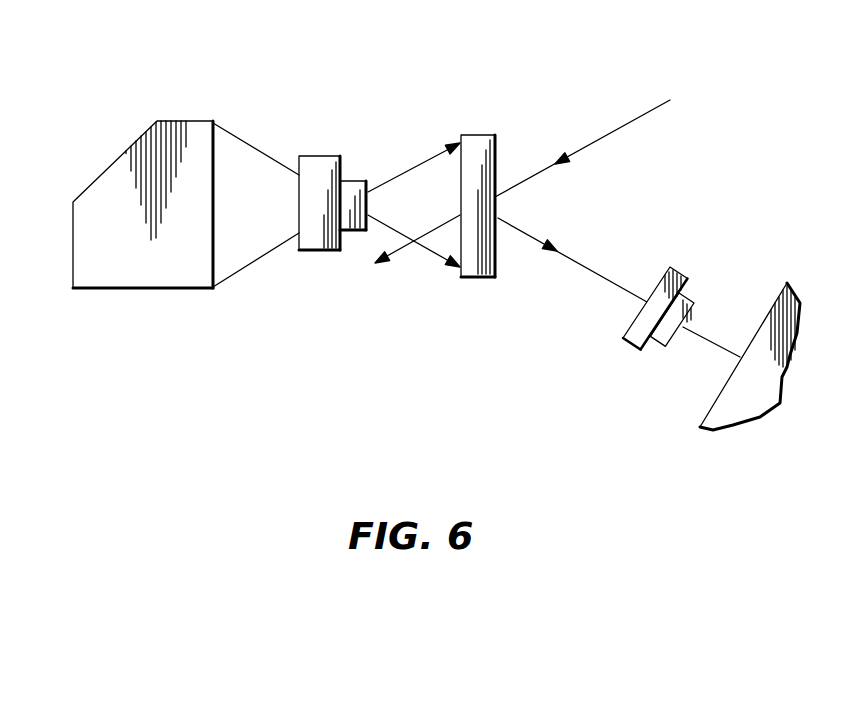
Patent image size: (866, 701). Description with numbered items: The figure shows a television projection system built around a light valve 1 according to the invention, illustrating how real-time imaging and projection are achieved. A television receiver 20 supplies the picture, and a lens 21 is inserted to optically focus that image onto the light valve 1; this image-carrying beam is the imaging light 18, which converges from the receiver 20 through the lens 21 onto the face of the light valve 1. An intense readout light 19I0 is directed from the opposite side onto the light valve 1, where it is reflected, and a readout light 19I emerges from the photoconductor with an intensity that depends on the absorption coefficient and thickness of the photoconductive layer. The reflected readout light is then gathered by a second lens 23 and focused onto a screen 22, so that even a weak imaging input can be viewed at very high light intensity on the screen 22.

The light valve 1 is at (491, 122).
The imaging light 18 is at (391, 225).
The readout light 19I0 is at (605, 135).
The readout light emerging from the photoconductor 19I is at (403, 253).
The television receiver 20 is at (188, 126).
The lens 21 is at (321, 163).
The screen 22 is at (803, 303).
The lens 23 is at (684, 275).